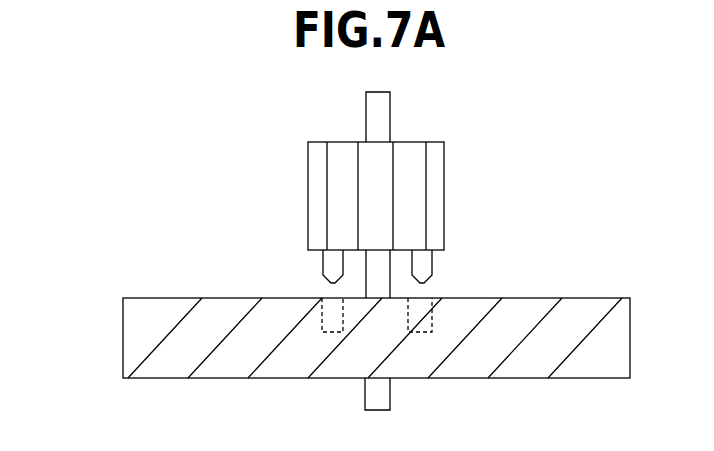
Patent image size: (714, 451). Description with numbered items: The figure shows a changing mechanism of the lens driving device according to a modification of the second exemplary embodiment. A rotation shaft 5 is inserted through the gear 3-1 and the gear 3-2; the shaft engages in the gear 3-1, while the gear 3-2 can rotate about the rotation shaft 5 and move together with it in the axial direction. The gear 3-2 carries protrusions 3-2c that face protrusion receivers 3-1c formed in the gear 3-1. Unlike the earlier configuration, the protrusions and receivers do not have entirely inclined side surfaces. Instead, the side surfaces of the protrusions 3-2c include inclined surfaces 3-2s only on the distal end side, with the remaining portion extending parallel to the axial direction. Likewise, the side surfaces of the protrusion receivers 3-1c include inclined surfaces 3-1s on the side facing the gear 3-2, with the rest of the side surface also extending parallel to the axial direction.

The gear 3-1 is at (133, 341).
The inclined surfaces 3-1s is at (345, 308).
The protrusion receivers 3-1c is at (440, 298).
The gear 3-2 is at (412, 157).
The inclined surfaces 3-2s is at (332, 265).
The protrusions 3-2c is at (423, 267).
The rotation shaft 5 is at (373, 115).